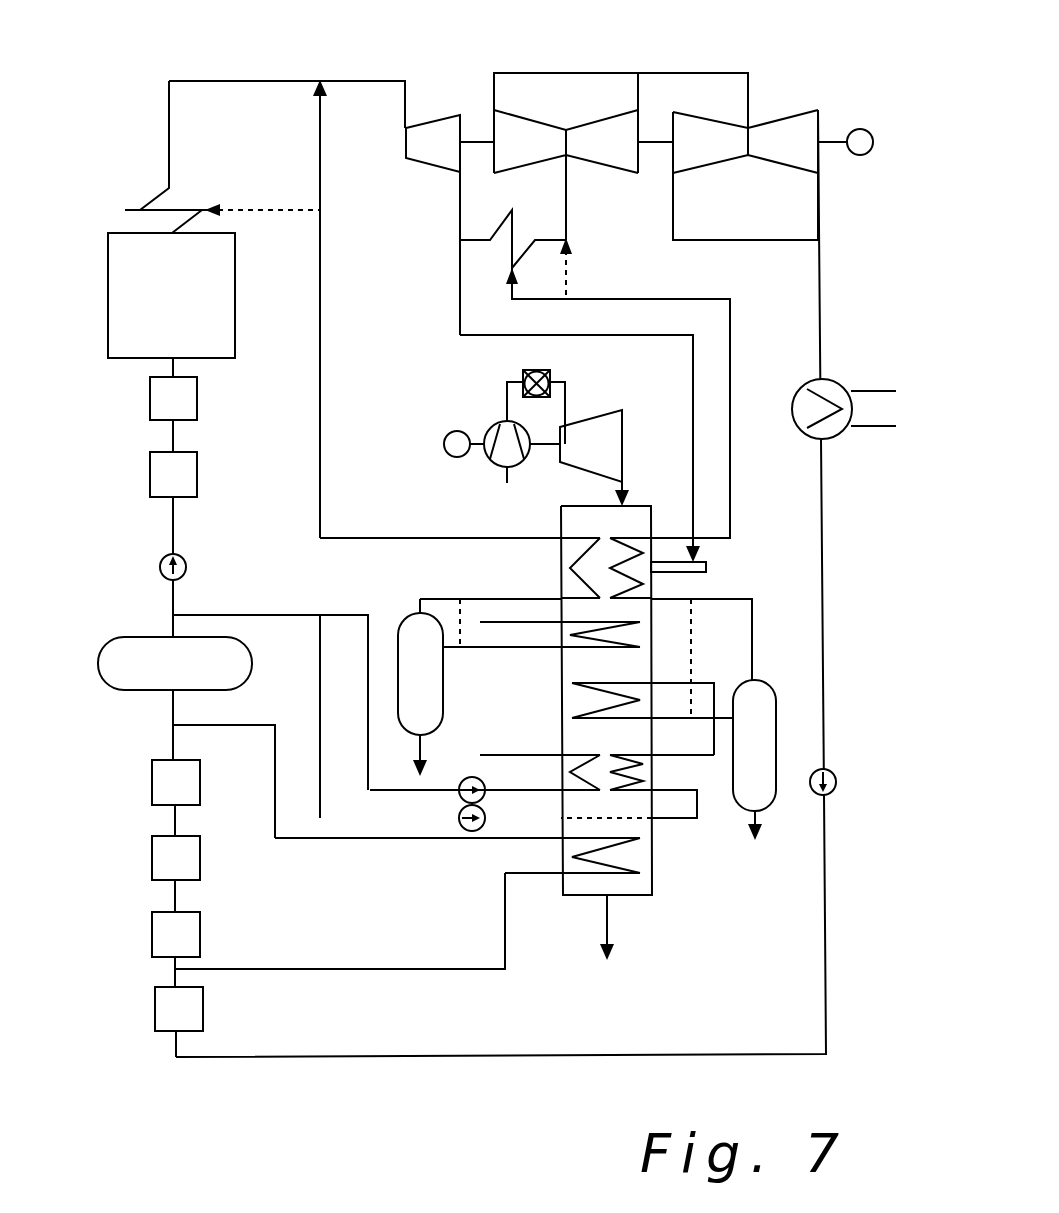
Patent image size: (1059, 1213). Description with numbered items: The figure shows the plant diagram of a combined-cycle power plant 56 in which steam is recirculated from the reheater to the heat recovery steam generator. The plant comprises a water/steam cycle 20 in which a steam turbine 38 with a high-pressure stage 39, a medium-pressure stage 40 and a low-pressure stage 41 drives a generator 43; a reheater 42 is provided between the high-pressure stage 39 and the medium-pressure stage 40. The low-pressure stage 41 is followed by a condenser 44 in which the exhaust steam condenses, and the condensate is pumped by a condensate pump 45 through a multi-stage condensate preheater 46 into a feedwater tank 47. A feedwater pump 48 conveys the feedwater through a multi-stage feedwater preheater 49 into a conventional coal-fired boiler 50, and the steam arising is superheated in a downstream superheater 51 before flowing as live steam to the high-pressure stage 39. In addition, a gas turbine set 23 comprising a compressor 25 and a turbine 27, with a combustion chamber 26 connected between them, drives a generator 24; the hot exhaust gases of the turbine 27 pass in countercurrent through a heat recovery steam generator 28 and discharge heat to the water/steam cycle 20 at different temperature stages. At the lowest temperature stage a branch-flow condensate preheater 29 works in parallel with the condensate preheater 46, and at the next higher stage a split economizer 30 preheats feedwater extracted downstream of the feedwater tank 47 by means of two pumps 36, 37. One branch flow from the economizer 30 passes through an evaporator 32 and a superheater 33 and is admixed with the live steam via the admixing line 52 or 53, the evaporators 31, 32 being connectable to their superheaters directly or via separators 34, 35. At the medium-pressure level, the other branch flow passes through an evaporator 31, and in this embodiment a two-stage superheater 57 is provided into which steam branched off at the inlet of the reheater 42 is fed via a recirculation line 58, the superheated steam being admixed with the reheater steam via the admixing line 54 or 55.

The water/steam cycle 20 is at (826, 997).
The gas turbine set 23 is at (418, 472).
The generator 24 is at (444, 444).
The compressor 25 is at (500, 468).
The combustion chamber 26 is at (552, 376).
The turbine 27 is at (607, 433).
The heat recovery steam generator 28 is at (580, 897).
The branch-flow condensate preheater 29 is at (652, 878).
The economizer 30 is at (650, 770).
The evaporator 31 is at (572, 708).
The evaporator 32 is at (640, 613).
The superheater 33 is at (568, 555).
The separator 34 is at (410, 630).
The separator 35 is at (759, 717).
The pump 36 is at (458, 797).
The pump 37 is at (472, 831).
The steam turbine 38 is at (838, 94).
The high-pressure stage 39 is at (450, 135).
The medium-pressure stage 40 is at (540, 130).
The low-pressure stage 41 is at (783, 132).
The reheater 42 is at (505, 262).
The generator 43 is at (868, 152).
The condenser 44 is at (831, 431).
The condensate pump 45 is at (836, 786).
The condensate preheater 46 is at (118, 888).
The feedwater tank 47 is at (138, 680).
The feedwater pump 48 is at (160, 568).
The feedwater preheater 49 is at (118, 440).
The boiler 50 is at (198, 322).
The superheater 51 is at (125, 210).
The admixing line 52 is at (283, 208).
The admixing line 53 is at (320, 128).
The admixing line 54 is at (540, 300).
The admixing line 55 is at (572, 277).
The combined-cycle power plant 56 is at (405, 351).
The two-stage superheater 57 is at (709, 568).
The recirculation line 58 is at (700, 370).